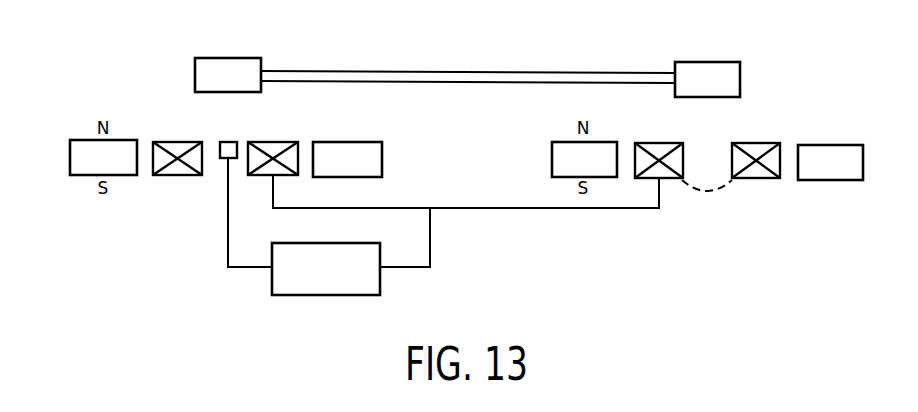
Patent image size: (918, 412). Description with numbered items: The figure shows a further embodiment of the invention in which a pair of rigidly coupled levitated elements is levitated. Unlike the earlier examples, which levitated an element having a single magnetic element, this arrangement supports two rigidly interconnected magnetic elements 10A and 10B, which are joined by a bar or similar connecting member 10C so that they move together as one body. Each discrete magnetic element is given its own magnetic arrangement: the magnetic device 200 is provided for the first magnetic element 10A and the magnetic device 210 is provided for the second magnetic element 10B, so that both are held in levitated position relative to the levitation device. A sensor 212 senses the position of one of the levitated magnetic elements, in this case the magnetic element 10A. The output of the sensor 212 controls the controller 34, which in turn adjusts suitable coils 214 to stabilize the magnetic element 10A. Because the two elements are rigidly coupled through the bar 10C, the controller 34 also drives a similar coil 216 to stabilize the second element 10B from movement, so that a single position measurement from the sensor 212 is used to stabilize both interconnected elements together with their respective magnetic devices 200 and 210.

The levitated magnetic element 10A is at (247, 58).
The levitated magnetic element 10B is at (733, 62).
The connecting bar 10C is at (473, 72).
The magnetic device 200 is at (372, 143).
The magnetic device 210 is at (853, 145).
The sensor 212 is at (220, 158).
The coils 214 is at (180, 142).
The coil 216 is at (765, 178).
The controller 34 is at (315, 295).